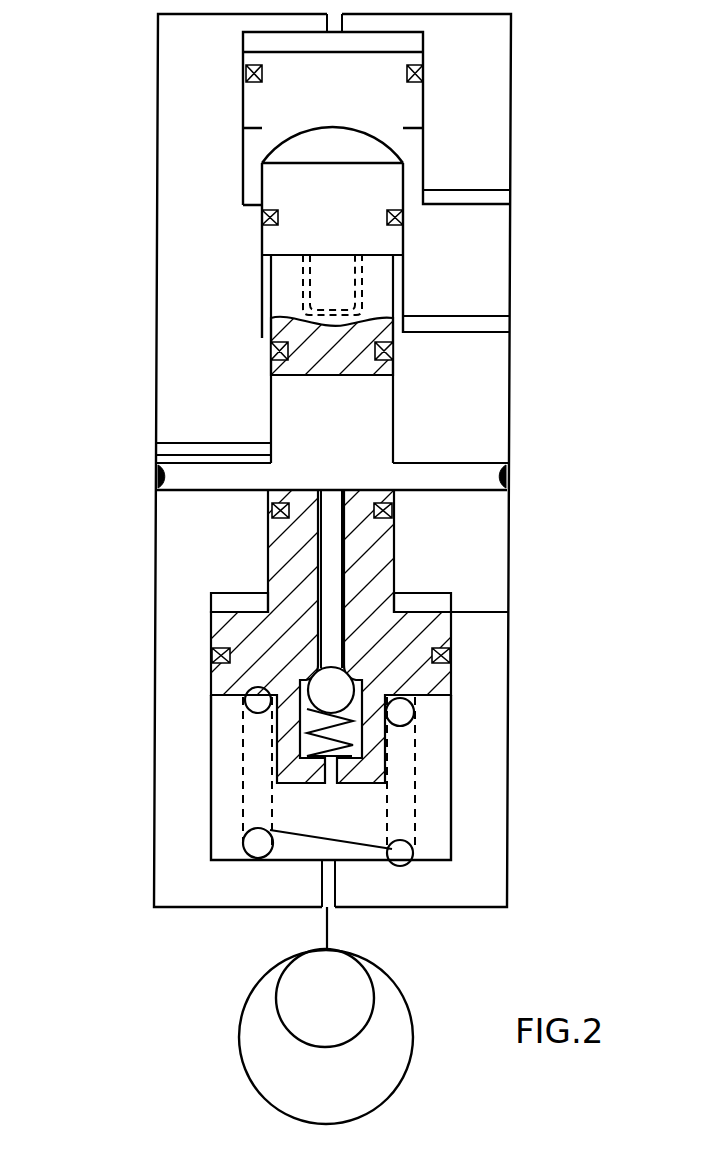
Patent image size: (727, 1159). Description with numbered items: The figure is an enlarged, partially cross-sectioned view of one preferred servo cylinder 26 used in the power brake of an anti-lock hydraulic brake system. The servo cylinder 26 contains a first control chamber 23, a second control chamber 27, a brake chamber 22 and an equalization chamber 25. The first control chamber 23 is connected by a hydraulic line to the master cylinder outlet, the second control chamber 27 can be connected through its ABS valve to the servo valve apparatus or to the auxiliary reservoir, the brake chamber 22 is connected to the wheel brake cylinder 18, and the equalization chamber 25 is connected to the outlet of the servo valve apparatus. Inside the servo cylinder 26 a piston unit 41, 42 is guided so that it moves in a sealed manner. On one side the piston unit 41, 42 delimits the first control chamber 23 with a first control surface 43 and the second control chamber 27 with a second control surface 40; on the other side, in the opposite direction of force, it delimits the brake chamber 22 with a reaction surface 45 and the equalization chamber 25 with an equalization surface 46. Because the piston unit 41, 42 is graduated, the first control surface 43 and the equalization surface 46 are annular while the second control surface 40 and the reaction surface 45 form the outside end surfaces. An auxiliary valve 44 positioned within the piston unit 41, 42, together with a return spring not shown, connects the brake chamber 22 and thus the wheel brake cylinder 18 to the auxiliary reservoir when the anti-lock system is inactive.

The wheel brake cylinder 18 is at (325, 995).
The brake chamber 22 is at (237, 817).
The first control chamber 23 is at (233, 602).
The equalization chamber 25 is at (275, 315).
The servo cylinder 26 is at (152, 250).
The second control chamber 27 is at (290, 42).
The second control surface 40 is at (377, 45).
The piston unit 41 is at (357, 97).
The piston unit 42 is at (365, 345).
The first control surface 43 is at (423, 612).
The auxiliary valve 44 is at (300, 720).
The reaction surface 45 is at (213, 713).
The equalization surface 46 is at (262, 273).